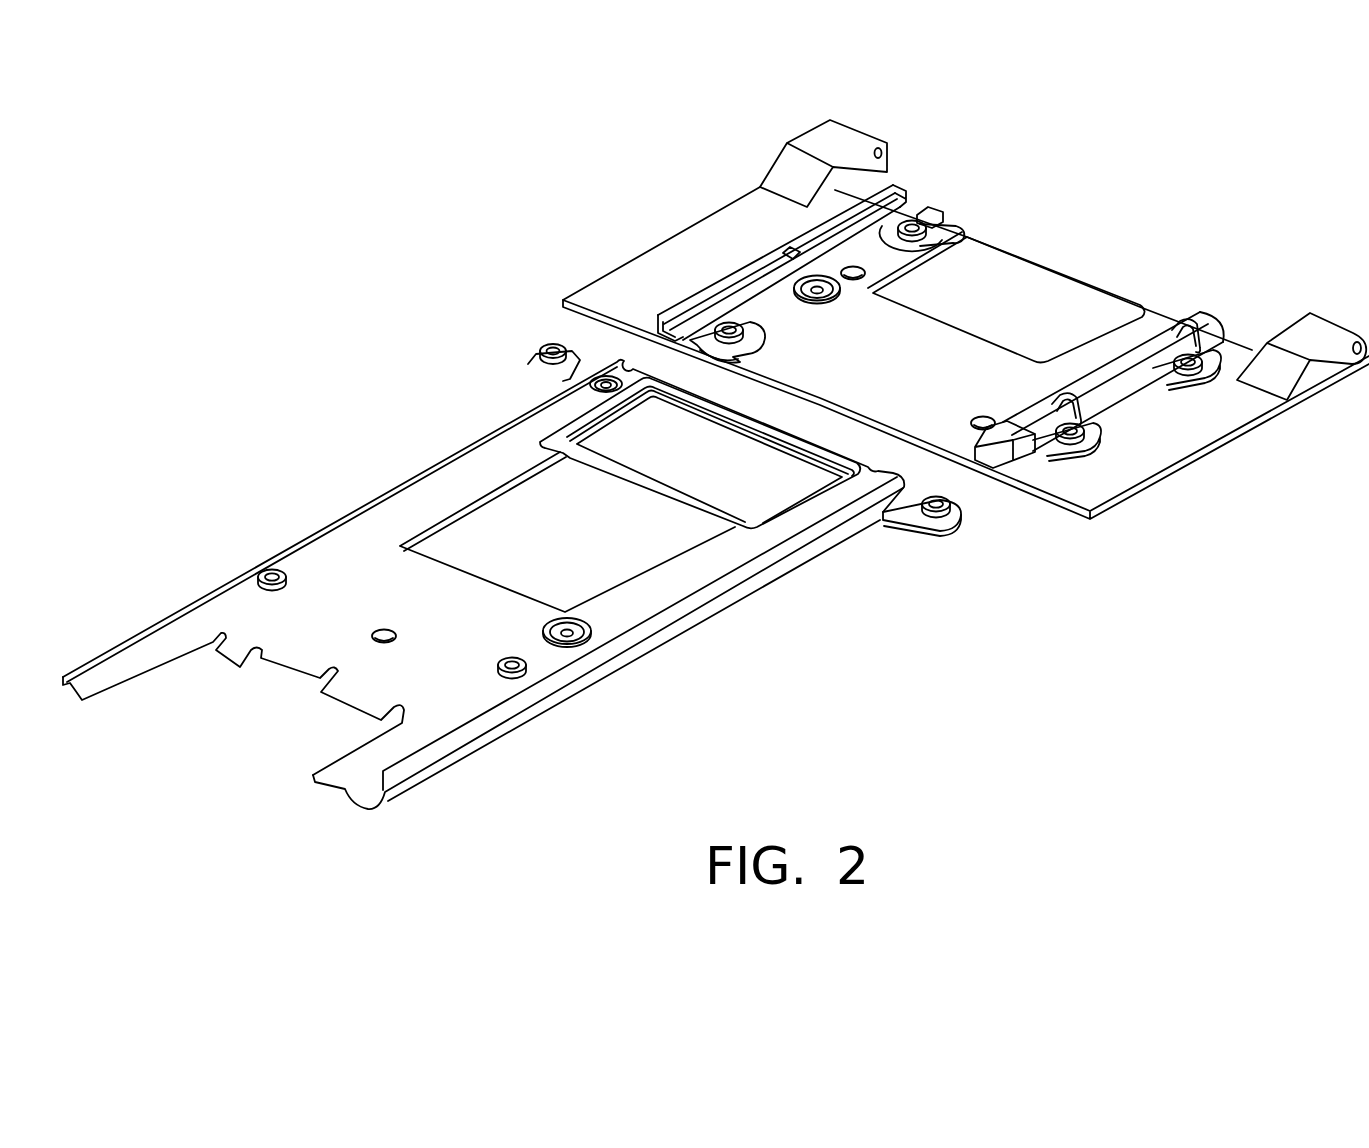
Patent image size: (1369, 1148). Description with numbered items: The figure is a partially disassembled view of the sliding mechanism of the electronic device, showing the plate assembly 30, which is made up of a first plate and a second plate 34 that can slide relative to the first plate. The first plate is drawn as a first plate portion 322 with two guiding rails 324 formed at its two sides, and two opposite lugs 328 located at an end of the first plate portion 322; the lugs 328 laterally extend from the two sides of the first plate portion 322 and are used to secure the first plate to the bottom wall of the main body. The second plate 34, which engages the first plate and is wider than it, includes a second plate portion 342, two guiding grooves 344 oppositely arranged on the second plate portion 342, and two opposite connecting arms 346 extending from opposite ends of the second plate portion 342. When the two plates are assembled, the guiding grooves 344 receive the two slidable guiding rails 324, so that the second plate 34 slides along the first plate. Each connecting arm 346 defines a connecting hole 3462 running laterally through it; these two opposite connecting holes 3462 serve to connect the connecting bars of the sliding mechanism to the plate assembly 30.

The plate assembly 30 is at (1103, 130).
The first plate portion 322 is at (327, 563).
The guiding rails 324 is at (493, 740).
The lugs 328 is at (962, 516).
The second plate 34 is at (1347, 252).
The second plate portion 342 is at (960, 355).
The guiding grooves 344 is at (1158, 342).
The connecting arms 346 is at (1288, 337).
The connecting holes 3462 is at (892, 152).